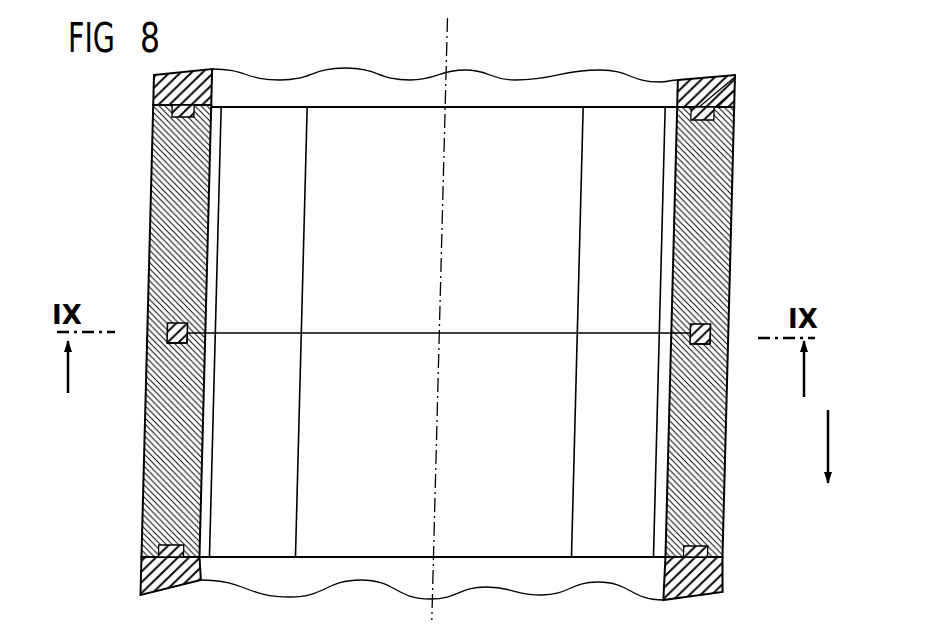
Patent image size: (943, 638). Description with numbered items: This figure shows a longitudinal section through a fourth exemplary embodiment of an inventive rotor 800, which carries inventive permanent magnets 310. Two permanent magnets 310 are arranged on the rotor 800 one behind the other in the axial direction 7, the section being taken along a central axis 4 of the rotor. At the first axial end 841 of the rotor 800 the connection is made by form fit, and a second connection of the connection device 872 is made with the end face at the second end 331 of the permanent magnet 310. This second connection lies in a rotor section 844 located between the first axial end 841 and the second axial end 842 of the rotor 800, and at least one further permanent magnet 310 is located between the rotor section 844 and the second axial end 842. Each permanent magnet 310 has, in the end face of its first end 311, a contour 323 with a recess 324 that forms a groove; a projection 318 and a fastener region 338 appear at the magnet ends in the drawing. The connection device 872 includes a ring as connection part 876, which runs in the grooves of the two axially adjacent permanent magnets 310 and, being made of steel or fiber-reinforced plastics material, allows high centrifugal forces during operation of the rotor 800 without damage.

The rotor 800 is at (526, 76).
The longitudinal axis 4 is at (432, 605).
The permanent magnet 310 is at (160, 184).
The first end 311 is at (130, 92).
The connection device 872 is at (123, 583).
The first axial end 841 is at (749, 106).
The projection 318 is at (698, 108).
The contour 323 is at (717, 78).
The recess 324 is at (736, 78).
The second axial end 842 is at (735, 562).
The second end 331 is at (142, 322).
The fastener 338 is at (145, 347).
The rotor section 844 is at (742, 322).
The connection part 876 is at (727, 346).
The axial direction 7 is at (826, 447).